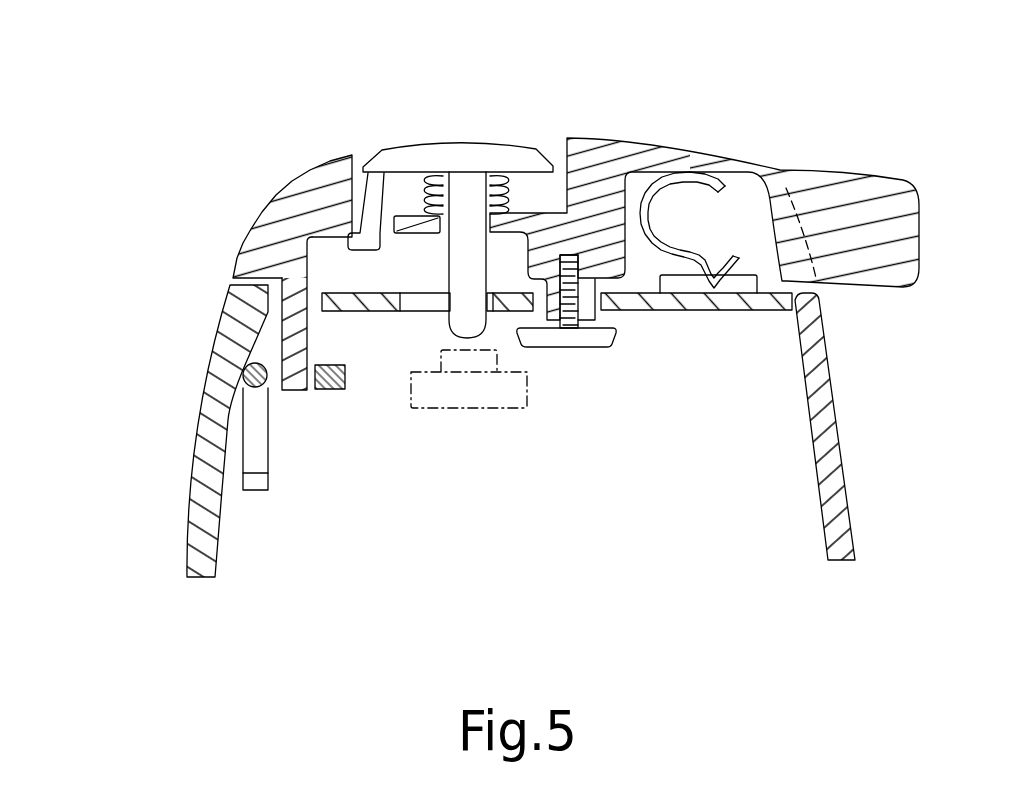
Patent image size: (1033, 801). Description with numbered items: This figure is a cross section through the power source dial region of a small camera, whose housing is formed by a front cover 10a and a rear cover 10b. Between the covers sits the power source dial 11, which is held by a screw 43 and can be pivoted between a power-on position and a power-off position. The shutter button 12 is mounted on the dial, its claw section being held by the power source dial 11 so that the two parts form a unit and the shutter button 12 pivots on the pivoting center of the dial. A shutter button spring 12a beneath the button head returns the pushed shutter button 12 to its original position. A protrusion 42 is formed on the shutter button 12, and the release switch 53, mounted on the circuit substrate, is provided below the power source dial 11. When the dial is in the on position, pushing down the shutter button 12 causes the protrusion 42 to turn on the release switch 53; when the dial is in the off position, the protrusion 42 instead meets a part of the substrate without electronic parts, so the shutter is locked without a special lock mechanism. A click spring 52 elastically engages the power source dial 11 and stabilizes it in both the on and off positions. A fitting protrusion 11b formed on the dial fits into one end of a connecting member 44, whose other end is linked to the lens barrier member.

The front cover 10a is at (191, 541).
The rear cover 10b is at (847, 512).
The power source dial 11 is at (630, 140).
The fitting protrusion 11b is at (293, 392).
The shutter button 12 is at (509, 140).
The shutter button spring 12a is at (420, 182).
The protrusion 42 is at (447, 320).
The screw 43 is at (597, 348).
The connecting member 44 is at (333, 389).
The click spring 52 is at (655, 223).
The release switch 53 is at (490, 395).